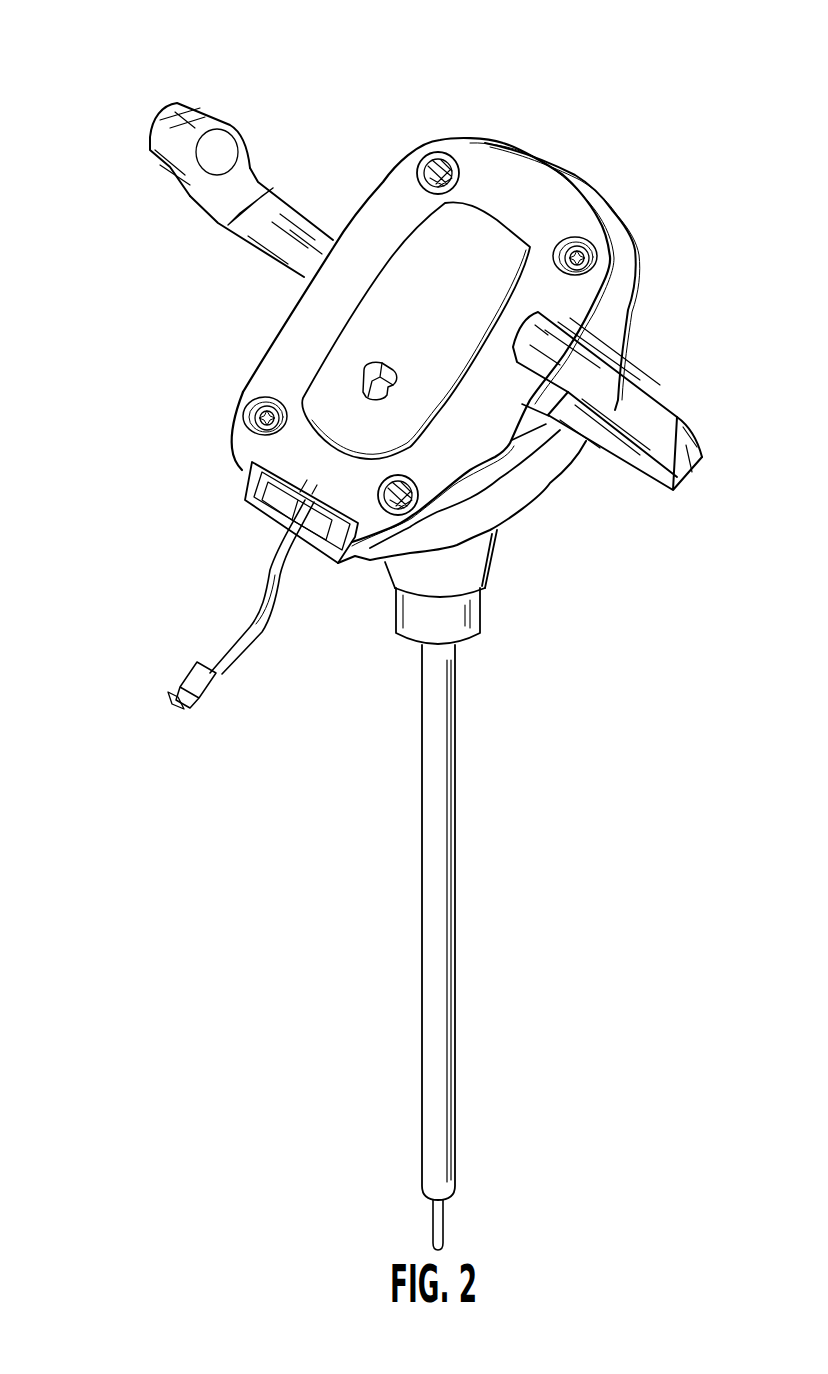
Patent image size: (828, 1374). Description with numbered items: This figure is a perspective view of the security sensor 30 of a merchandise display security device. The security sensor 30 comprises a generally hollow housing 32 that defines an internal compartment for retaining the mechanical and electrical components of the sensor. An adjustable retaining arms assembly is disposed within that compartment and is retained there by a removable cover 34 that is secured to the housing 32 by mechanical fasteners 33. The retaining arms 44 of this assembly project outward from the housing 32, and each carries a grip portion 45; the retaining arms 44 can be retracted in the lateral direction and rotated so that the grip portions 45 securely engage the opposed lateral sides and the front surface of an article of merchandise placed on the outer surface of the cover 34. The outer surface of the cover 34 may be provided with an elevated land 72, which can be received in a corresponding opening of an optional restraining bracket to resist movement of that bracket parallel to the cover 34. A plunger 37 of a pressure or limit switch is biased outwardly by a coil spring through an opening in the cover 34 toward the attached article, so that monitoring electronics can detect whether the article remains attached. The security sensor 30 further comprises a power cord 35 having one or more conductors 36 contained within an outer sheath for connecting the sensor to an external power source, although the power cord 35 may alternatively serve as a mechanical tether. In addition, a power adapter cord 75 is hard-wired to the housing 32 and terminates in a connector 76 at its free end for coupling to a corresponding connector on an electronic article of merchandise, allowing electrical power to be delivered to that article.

The security sensor 30 is at (82, 119).
The housing 32 is at (522, 492).
The mechanical fasteners 33 is at (432, 168).
The cover 34 is at (538, 200).
The power cord 35 is at (427, 917).
The conductors 36 is at (444, 1222).
The plunger 37 is at (372, 368).
The retaining arms 44 is at (296, 230).
The grip portions 45 is at (174, 124).
The elevated land 72 is at (451, 313).
The power adapter cord 75 is at (258, 632).
The connector 76 is at (194, 702).